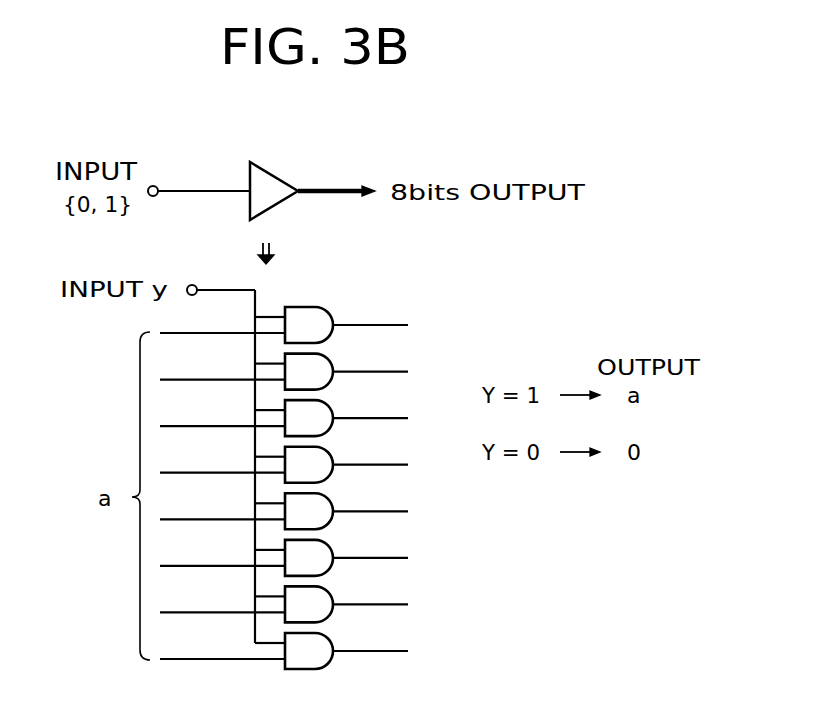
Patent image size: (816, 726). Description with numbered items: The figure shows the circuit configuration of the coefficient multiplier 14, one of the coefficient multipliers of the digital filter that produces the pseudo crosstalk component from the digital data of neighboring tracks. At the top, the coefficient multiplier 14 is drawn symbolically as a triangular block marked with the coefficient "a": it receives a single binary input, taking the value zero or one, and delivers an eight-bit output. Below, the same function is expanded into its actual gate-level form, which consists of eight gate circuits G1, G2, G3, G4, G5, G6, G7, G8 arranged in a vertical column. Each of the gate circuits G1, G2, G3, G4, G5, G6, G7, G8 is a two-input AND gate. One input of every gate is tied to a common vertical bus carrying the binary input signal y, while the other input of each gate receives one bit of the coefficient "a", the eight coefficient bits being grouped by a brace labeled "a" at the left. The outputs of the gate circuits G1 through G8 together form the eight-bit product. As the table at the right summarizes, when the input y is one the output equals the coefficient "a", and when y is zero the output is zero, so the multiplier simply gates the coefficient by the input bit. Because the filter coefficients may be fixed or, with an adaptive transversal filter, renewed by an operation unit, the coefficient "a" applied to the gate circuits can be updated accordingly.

The coefficient multiplier 14 is at (277, 176).
The gate circuit G1 is at (331, 635).
The gate circuit G2 is at (331, 588).
The gate circuit G3 is at (331, 542).
The gate circuit G4 is at (331, 495).
The gate circuit G5 is at (331, 449).
The gate circuit G6 is at (331, 402).
The gate circuit G7 is at (331, 356).
The gate circuit G8 is at (331, 309).